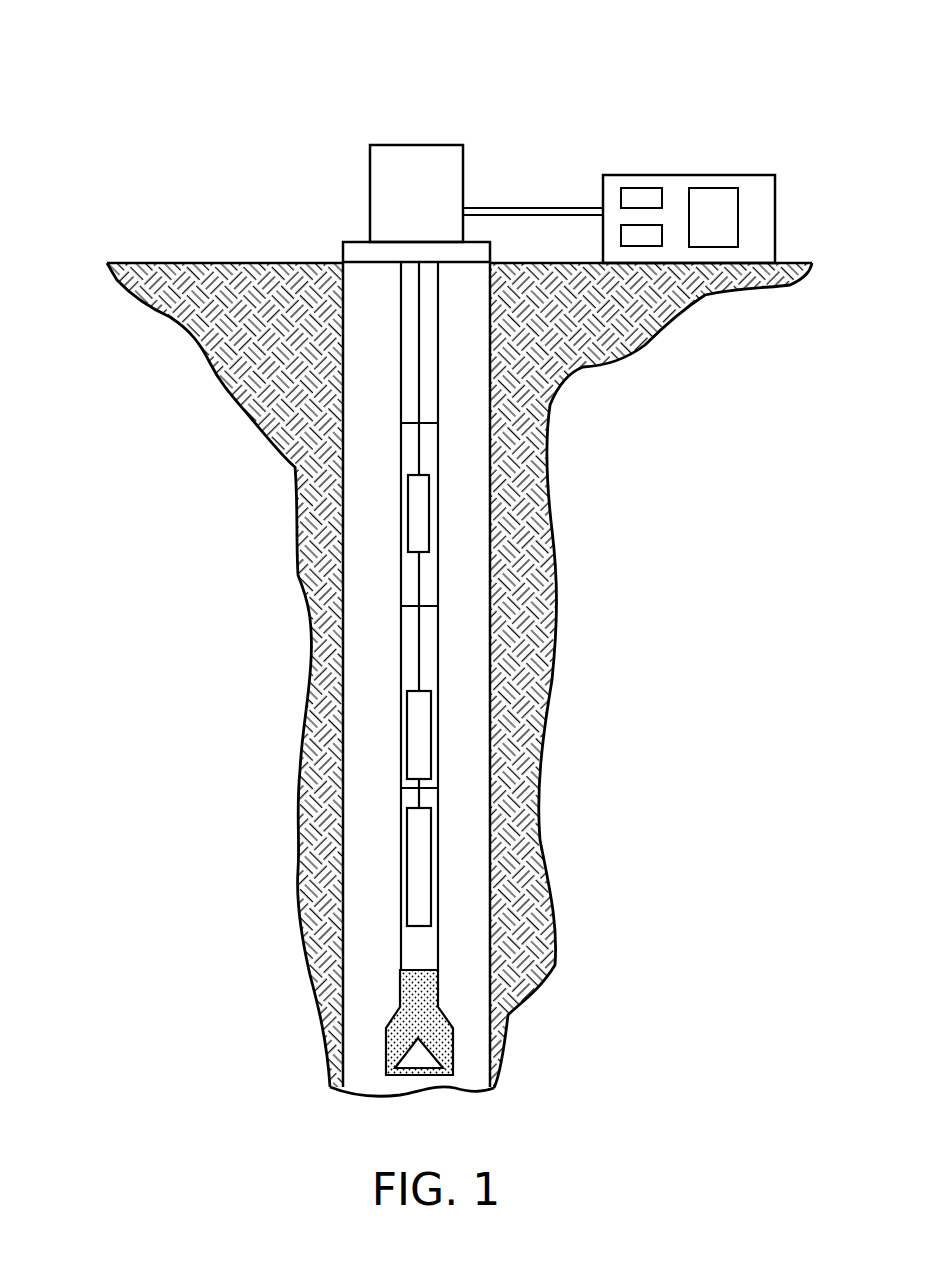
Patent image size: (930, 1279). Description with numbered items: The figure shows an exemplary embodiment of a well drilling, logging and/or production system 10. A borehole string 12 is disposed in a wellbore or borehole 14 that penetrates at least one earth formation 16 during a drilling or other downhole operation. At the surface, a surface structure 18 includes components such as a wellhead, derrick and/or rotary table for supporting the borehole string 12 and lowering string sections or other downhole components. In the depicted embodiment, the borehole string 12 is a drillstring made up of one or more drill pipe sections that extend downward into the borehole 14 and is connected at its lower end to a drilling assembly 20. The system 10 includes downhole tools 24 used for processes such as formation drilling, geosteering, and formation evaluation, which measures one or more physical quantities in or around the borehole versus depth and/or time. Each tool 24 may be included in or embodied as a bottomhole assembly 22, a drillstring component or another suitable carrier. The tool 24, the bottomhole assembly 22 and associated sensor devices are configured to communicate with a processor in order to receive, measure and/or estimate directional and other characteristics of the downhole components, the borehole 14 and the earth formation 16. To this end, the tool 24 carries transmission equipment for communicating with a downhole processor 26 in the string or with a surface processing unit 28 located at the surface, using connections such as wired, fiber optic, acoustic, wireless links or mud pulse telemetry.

The well drilling, logging and/or production system 10 is at (150, 101).
The borehole string 12 is at (400, 603).
The borehole 14 is at (470, 553).
The earth formation 16 is at (260, 379).
The surface structure 18 is at (415, 145).
The drilling assembly 20 is at (438, 970).
The bottomhole assembly 22 is at (468, 900).
The downhole tool 24 is at (431, 733).
The downhole processor 26 is at (429, 512).
The surface processing unit 28 is at (747, 175).